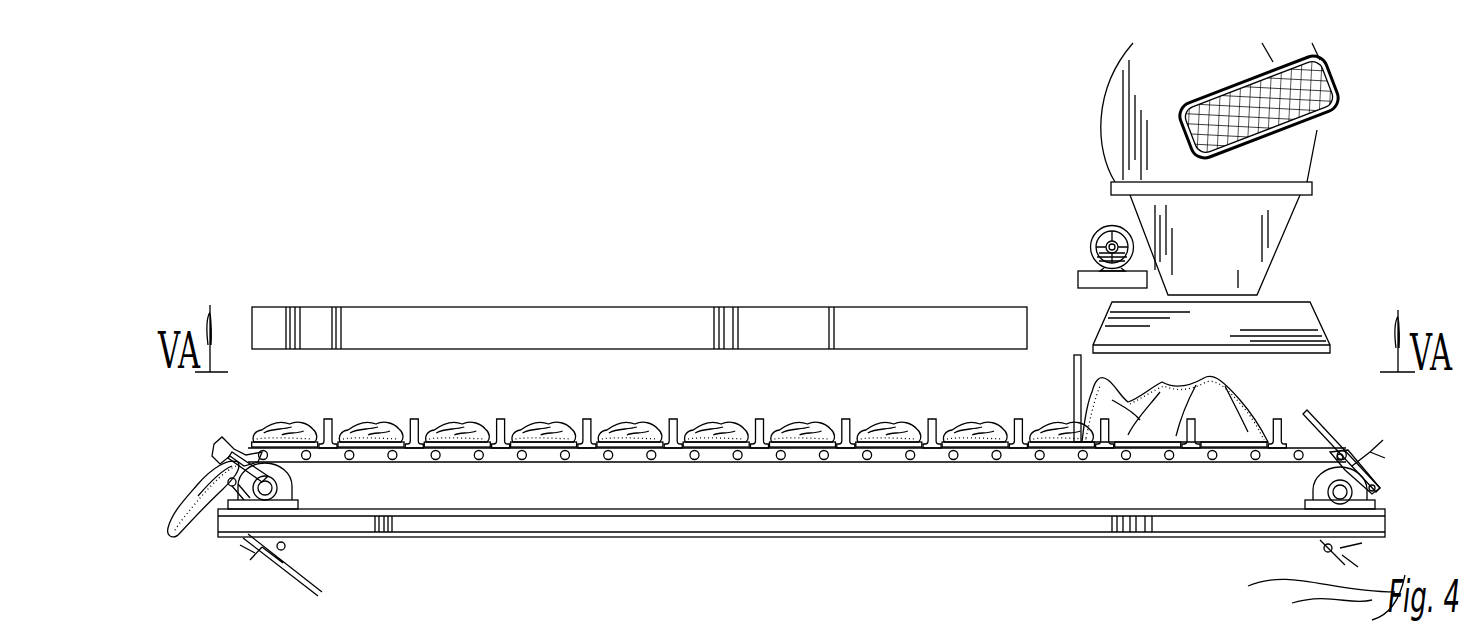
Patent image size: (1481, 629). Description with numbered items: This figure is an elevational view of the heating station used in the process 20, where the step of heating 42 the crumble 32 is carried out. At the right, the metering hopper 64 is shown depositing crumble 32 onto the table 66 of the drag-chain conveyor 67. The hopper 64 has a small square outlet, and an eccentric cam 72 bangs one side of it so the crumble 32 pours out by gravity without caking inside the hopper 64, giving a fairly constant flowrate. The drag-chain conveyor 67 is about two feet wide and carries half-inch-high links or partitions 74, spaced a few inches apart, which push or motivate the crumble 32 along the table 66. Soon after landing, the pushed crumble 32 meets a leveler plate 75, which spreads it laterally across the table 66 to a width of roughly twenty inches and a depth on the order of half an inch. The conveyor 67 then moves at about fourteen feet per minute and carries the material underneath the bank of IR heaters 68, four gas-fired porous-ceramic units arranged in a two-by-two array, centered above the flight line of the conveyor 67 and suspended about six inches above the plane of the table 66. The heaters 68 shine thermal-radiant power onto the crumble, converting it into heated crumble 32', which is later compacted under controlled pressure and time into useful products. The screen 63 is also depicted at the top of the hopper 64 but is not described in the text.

The conveyor apparatus 20 is at (776, 380).
The conveyor assembly 42 is at (506, 240).
The guide bar 68 is at (641, 314).
The dough piece on tray 32' is at (459, 413).
The tray divider post 74 is at (849, 419).
The stop pillar 75 is at (1078, 378).
The dough pile 32 is at (1198, 405).
The discharge scraper bar 67 is at (1318, 421).
The conveyor chain 66 is at (948, 461).
The drive motor 72 is at (1133, 235).
The hopper 64 is at (1264, 258).
The screen 63 is at (1310, 157).